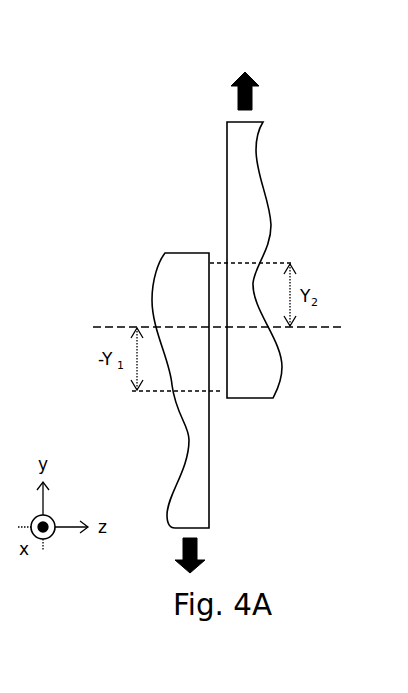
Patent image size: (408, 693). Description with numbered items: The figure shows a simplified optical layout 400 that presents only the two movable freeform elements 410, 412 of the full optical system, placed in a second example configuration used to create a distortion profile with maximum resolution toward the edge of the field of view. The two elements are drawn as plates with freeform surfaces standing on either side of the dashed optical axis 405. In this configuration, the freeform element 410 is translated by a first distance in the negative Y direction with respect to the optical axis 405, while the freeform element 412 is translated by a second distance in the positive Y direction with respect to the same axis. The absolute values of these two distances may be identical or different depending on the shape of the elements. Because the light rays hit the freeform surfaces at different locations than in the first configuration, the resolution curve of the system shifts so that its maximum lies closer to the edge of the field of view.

The simplified optical layout 400 is at (217, 299).
The optical axis 405 is at (219, 317).
The freeform element 410 is at (180, 390).
The freeform element 412 is at (254, 260).